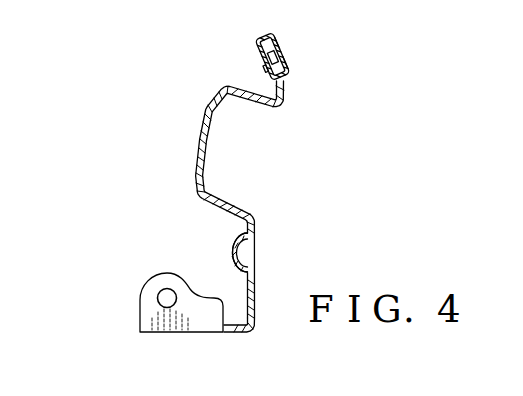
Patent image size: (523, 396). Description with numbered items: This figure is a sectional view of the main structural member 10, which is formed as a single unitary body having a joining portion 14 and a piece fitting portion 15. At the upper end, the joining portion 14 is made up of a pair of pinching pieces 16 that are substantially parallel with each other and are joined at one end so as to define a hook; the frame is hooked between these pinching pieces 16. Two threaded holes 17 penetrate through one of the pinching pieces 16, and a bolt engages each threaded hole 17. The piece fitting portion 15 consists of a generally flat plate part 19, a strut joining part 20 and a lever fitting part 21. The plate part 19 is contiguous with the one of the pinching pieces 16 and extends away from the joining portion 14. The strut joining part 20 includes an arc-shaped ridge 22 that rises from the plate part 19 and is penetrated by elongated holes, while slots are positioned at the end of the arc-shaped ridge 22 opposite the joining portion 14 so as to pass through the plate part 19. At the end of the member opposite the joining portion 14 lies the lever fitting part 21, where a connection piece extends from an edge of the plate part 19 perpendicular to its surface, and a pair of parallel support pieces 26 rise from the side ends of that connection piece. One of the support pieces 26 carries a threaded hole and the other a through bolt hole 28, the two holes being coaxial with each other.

The main structural member 10 is at (207, 80).
The joining portion 14 is at (258, 62).
The piece fitting portion 15 is at (198, 150).
The pinching pieces 16 is at (291, 68).
The threaded holes 17 is at (288, 77).
The plate part 19 is at (256, 222).
The strut joining part 20 is at (224, 240).
The lever fitting part 21 is at (185, 333).
The arc-shaped ridge 22 is at (231, 255).
The support pieces 26 is at (152, 315).
The through bolt hole 28 is at (160, 295).